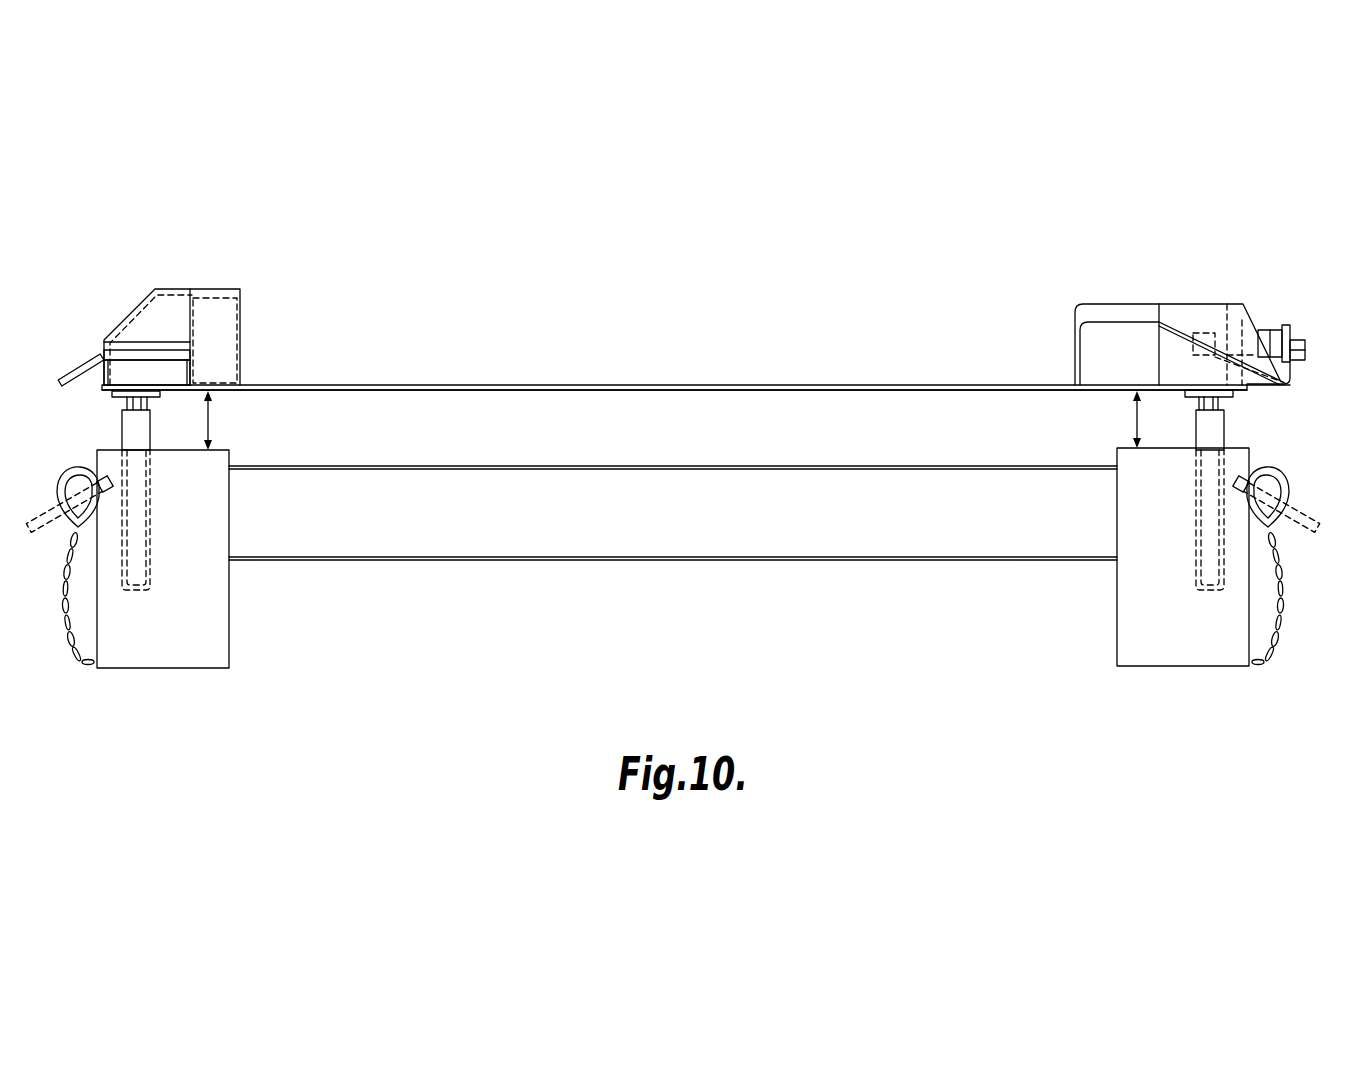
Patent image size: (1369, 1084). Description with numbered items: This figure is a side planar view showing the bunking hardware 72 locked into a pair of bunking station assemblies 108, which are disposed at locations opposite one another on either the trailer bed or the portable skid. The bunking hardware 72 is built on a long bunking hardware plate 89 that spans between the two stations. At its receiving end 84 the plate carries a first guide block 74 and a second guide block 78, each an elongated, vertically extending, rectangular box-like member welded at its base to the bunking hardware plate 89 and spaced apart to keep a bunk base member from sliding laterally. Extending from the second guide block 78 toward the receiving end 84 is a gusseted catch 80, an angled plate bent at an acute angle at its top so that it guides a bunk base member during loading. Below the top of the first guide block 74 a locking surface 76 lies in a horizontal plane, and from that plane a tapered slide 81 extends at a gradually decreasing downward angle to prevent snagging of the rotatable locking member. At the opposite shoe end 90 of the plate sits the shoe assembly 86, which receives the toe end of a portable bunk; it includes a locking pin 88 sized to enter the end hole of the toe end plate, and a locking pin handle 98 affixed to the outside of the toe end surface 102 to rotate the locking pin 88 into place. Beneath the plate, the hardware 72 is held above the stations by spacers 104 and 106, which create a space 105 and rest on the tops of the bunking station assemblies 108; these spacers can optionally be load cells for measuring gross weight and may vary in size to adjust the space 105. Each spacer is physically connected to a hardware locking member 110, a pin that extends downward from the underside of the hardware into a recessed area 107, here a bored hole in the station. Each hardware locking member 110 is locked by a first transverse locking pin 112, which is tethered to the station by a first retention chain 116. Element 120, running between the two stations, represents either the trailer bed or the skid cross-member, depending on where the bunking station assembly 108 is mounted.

The bunking hardware 72 is at (735, 338).
The first guide block 74 is at (228, 323).
The locking surface 76 is at (137, 357).
The second guide block 78 is at (214, 297).
The gusseted catch 80 is at (152, 290).
The slide 81 is at (85, 367).
The receiving end 84 is at (188, 393).
The shoe assembly 86 is at (1224, 292).
The locking pin 88 is at (1212, 333).
The bunking hardware plate 89 is at (883, 392).
The shoe end 90 is at (1156, 394).
The locking pin handle 98 is at (1305, 350).
The toe end surface 102 is at (1235, 315).
The spacer 104 is at (127, 420).
The space 105 is at (212, 420).
The spacer 106 is at (1224, 428).
The recessed area 107 is at (147, 593).
The bunking station assembly 108 is at (143, 675).
The hardware locking member 110 is at (147, 518).
The first transverse locking pin 112 is at (77, 470).
The first retention chain 116 is at (75, 665).
The trailer bed or skid cross-member 120 is at (725, 467).